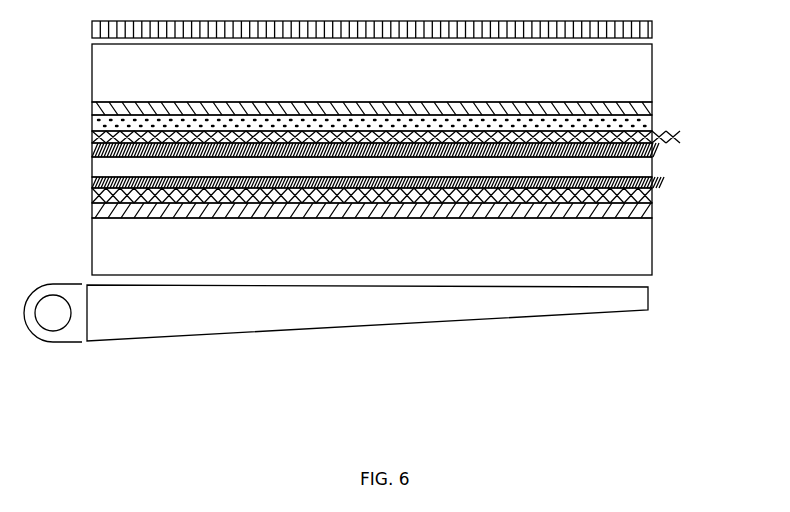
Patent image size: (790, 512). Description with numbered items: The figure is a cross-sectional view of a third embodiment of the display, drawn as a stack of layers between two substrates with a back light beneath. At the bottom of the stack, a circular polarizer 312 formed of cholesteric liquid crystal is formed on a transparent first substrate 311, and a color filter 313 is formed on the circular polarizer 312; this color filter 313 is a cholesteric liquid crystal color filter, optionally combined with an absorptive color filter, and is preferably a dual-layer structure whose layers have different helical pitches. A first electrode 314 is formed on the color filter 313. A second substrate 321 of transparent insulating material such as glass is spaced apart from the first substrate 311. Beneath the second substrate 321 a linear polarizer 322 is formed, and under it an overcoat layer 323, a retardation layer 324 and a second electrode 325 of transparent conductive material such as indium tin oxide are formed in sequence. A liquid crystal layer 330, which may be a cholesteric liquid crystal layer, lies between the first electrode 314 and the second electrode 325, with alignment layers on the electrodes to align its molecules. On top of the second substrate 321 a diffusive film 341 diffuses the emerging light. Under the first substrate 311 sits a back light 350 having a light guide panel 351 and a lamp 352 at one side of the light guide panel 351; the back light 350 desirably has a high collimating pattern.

The diffusive film 341 is at (636, 33).
The second substrate 321 is at (634, 74).
The linear polarizer 322 is at (645, 108).
The overcoat layer 323 is at (640, 128).
The retardation layer 324 is at (645, 140).
The second electrode 325 is at (645, 151).
The liquid crystal layer 330 is at (634, 171).
The first electrode 314 is at (645, 183).
The color filter 313 is at (645, 197).
The circular polarizer 312 is at (645, 212).
The first substrate 311 is at (634, 260).
The back light 350 is at (370, 334).
The light guide panel 351 is at (361, 316).
The lamp 352 is at (54, 318).